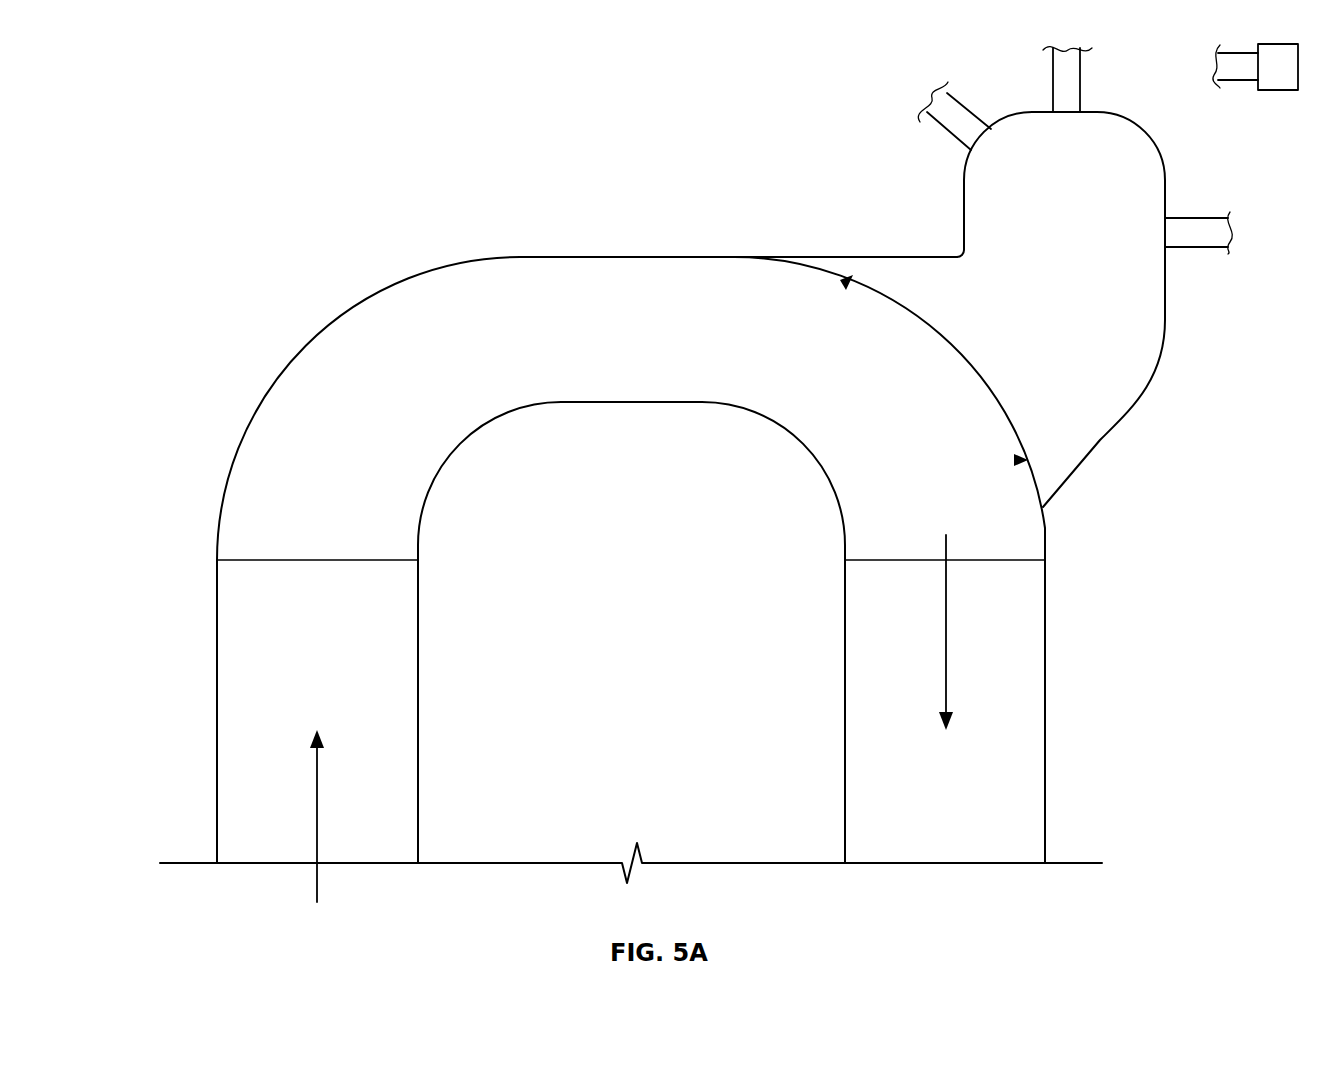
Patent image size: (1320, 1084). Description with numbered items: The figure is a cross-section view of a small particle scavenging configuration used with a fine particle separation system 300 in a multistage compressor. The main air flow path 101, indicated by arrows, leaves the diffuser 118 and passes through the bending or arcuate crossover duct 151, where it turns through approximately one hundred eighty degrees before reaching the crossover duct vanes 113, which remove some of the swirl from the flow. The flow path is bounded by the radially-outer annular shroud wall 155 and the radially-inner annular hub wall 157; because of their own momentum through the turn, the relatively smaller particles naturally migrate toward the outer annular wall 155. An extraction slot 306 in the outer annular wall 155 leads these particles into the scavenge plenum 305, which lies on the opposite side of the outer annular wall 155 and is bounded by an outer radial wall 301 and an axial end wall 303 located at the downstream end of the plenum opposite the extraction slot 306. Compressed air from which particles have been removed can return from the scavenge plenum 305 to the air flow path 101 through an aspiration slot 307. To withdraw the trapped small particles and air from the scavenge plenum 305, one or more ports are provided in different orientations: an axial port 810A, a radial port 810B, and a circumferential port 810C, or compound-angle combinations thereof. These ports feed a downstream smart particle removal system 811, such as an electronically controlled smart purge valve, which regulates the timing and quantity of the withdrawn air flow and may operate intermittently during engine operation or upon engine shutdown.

The fine particle separation system 300 is at (178, 145).
The air flow path 101 is at (317, 772).
The crossover duct vanes 113 is at (967, 806).
The diffuser 118 is at (338, 667).
The crossover duct 151 is at (675, 152).
The outer annular wall 155 is at (283, 373).
The inner annular wall 157 is at (458, 455).
The outer radial wall 301 is at (927, 257).
The axial end wall 303 is at (1166, 214).
The scavenge plenum 305 is at (1088, 218).
The extraction slot 306 is at (845, 283).
The aspiration slot 307 is at (1020, 462).
The axial port 810A is at (1190, 247).
The radial port 810B is at (1080, 93).
The circumferential port 810C is at (963, 127).
The smart particle removal system 811 is at (1278, 90).